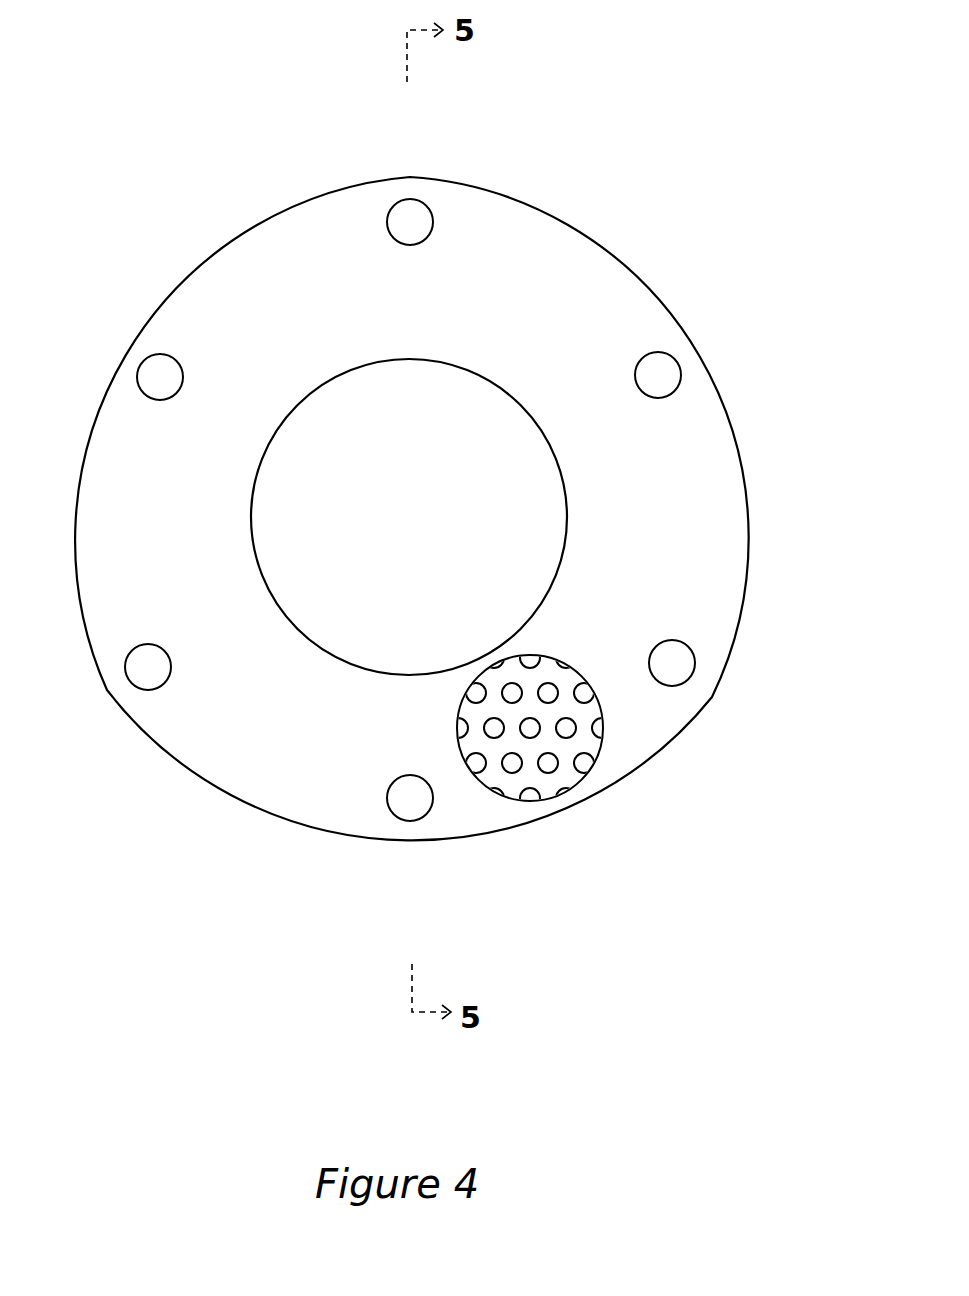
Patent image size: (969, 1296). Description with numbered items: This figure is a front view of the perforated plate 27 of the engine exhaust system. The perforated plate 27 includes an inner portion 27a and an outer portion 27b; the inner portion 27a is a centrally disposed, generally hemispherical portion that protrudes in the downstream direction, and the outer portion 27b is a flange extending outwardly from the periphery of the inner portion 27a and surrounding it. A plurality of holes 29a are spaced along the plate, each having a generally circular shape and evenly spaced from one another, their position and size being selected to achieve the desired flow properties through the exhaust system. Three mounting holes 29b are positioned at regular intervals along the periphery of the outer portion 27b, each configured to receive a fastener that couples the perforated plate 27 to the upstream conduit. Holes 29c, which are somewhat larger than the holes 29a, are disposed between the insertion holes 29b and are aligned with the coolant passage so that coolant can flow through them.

The perforated plate 27 is at (479, 508).
The inner portion 27a is at (553, 540).
The outer portion 27b is at (732, 504).
The holes 29a is at (575, 733).
The mounting holes 29b is at (418, 240).
The holes 29c is at (146, 367).